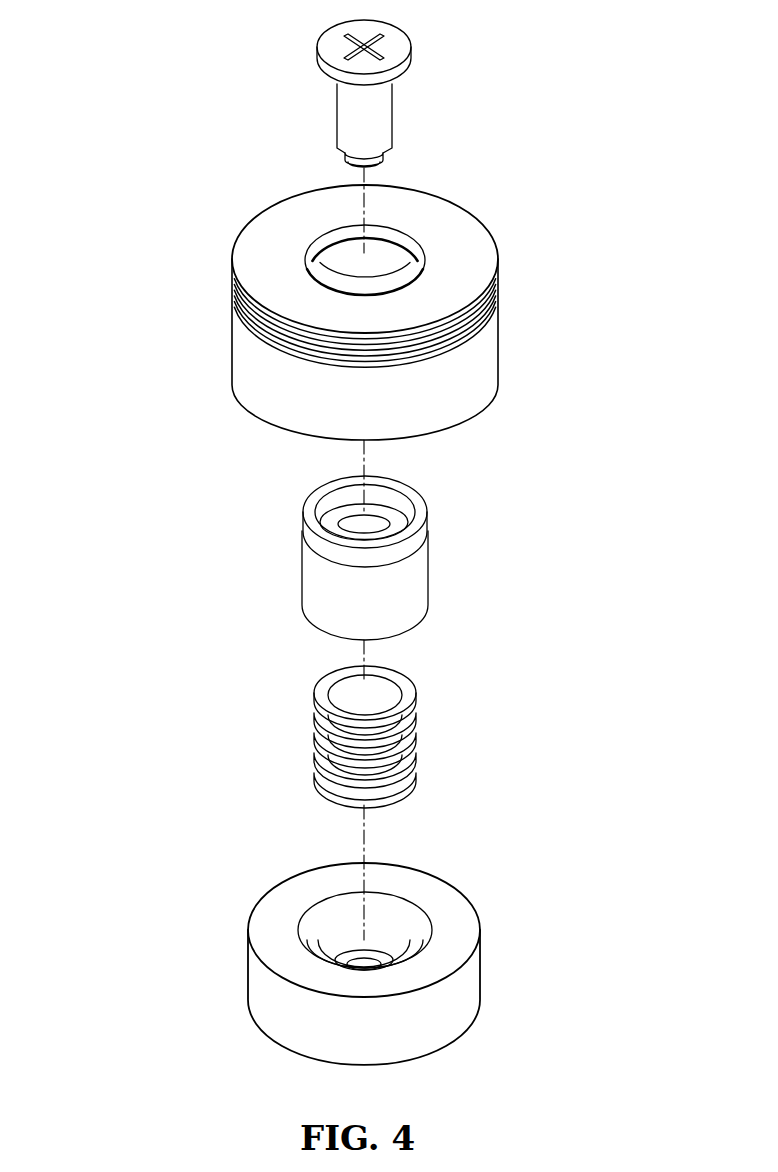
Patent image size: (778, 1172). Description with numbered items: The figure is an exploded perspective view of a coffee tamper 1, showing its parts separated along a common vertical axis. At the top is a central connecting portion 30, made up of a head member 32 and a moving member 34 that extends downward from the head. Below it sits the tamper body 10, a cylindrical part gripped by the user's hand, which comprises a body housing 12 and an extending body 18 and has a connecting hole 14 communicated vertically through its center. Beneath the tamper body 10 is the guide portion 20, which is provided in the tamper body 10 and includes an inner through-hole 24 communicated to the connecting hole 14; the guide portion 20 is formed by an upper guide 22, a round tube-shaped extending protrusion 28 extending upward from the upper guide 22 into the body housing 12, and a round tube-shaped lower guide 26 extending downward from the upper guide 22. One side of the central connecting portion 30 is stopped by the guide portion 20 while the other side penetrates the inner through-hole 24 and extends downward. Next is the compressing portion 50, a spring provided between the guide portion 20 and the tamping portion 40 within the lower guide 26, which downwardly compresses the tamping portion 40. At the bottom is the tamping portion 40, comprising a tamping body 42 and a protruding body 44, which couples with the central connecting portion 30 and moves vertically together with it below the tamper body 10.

The coffee tamper 1 is at (96, 218).
The tamper body 10 is at (575, 304).
The body housing 12 is at (467, 238).
The connecting hole 14 is at (387, 252).
The extending body 18 is at (475, 382).
The guide portion 20 is at (496, 554).
The upper guide 22 is at (418, 562).
The inner through-hole 24 is at (372, 525).
The lower guide 26 is at (422, 600).
The extending protrusion 28 is at (317, 498).
The central connecting portion 30 is at (500, 52).
The head member 32 is at (407, 47).
The moving member 34 is at (381, 105).
The tamping portion 40 is at (550, 876).
The tamping body 42 is at (393, 947).
The protruding body 44 is at (475, 930).
The compressing portion 50 is at (405, 687).